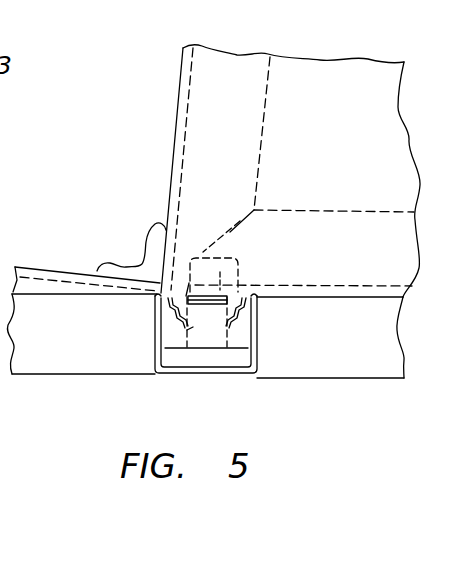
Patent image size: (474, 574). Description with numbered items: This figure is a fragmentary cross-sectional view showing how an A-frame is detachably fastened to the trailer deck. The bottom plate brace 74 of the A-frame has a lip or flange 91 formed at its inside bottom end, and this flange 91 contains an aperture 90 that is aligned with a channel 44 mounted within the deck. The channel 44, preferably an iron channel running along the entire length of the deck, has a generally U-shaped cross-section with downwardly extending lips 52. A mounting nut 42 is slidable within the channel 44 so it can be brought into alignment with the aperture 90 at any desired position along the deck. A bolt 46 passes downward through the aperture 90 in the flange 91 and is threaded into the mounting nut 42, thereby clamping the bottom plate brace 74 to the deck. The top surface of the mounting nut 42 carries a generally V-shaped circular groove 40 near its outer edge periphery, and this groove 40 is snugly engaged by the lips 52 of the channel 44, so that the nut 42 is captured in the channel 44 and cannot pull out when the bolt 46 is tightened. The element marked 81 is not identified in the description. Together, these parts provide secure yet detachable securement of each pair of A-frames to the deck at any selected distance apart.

The groove 40 is at (204, 330).
The mounting nut 42 is at (178, 343).
The channel 44 is at (250, 372).
The bolt 46 is at (222, 235).
The lip 52 is at (176, 300).
The bottom plate brace 74 is at (337, 225).
The molding 81 is at (157, 228).
The aperture 90 is at (189, 283).
The flange 91 is at (404, 245).